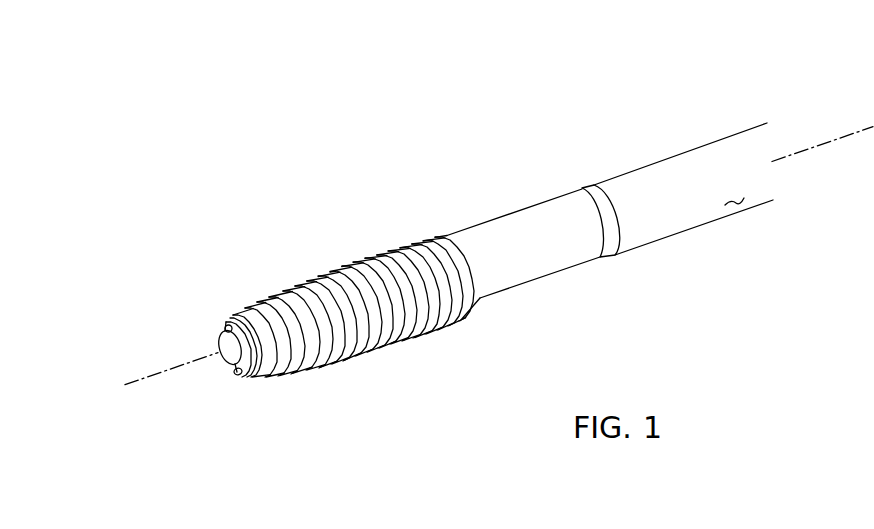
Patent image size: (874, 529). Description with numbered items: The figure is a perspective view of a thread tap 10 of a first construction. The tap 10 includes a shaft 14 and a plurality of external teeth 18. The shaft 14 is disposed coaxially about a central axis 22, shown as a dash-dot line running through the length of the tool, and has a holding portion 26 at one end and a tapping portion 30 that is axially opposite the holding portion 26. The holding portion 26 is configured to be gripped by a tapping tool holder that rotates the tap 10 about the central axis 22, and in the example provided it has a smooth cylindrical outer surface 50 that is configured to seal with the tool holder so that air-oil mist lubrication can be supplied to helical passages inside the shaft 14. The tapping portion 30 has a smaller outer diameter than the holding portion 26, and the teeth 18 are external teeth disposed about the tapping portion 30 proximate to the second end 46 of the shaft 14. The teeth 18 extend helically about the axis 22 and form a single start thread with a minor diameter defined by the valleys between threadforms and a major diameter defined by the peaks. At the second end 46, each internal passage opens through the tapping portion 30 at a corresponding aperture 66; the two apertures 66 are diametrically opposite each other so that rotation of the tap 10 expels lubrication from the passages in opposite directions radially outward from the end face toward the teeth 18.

The thread tap 10 is at (397, 99).
The shaft 14 is at (577, 260).
The external teeth 18 is at (365, 257).
The central axis 22 is at (824, 141).
The holding portion 26 is at (687, 157).
The tapping portion 30 is at (393, 345).
The second end 46 is at (222, 347).
The cylindrical outer surface 50 is at (741, 203).
The aperture 66 is at (227, 325).